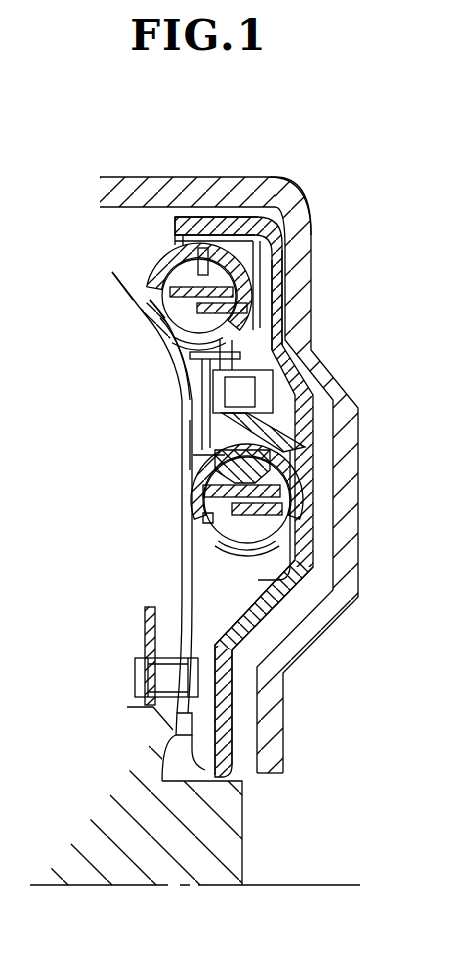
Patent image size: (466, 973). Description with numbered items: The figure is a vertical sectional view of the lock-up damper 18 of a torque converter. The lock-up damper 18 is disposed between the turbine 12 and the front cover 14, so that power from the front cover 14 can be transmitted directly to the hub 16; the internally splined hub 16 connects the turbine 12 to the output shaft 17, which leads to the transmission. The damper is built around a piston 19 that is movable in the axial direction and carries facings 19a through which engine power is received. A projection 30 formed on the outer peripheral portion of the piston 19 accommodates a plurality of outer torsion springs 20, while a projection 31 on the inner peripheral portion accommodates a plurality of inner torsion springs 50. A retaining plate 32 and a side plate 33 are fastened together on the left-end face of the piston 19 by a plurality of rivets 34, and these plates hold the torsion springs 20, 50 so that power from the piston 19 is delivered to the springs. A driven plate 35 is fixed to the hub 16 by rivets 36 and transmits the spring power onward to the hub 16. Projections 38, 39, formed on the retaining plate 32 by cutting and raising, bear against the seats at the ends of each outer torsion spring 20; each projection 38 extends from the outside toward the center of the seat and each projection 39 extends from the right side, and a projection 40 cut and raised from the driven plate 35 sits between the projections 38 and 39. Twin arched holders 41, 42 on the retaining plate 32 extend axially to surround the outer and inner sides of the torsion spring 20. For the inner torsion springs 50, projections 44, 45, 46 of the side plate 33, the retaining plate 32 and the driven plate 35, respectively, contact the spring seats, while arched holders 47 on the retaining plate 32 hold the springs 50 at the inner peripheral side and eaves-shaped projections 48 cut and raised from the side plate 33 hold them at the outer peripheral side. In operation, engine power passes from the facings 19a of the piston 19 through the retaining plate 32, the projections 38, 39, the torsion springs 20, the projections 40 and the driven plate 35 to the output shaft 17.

The turbine 12 is at (126, 268).
The front cover 14 is at (347, 490).
The hub 16 is at (162, 733).
The output shaft 17 is at (87, 887).
The lock-up damper 18 is at (131, 251).
The piston 19 is at (335, 401).
The facings 19a is at (283, 247).
The torsion springs 20 is at (166, 279).
The projection 30 is at (285, 323).
The projection 31 is at (314, 563).
The retaining plate 32 is at (273, 370).
The side plate 33 is at (178, 447).
The rivets 34 is at (185, 398).
The driven plate 35 is at (178, 424).
The rivets 36 is at (150, 679).
The projections 38 is at (225, 240).
The projections 39 is at (258, 305).
The projections 40 is at (304, 213).
The holder 41 is at (203, 248).
The holder 42 is at (176, 366).
The projection 44 is at (270, 450).
The projection 45 is at (300, 530).
The projection 46 is at (270, 472).
The arched holders 47 is at (233, 553).
The projections 48 is at (173, 472).
The torsion springs 50 is at (207, 522).